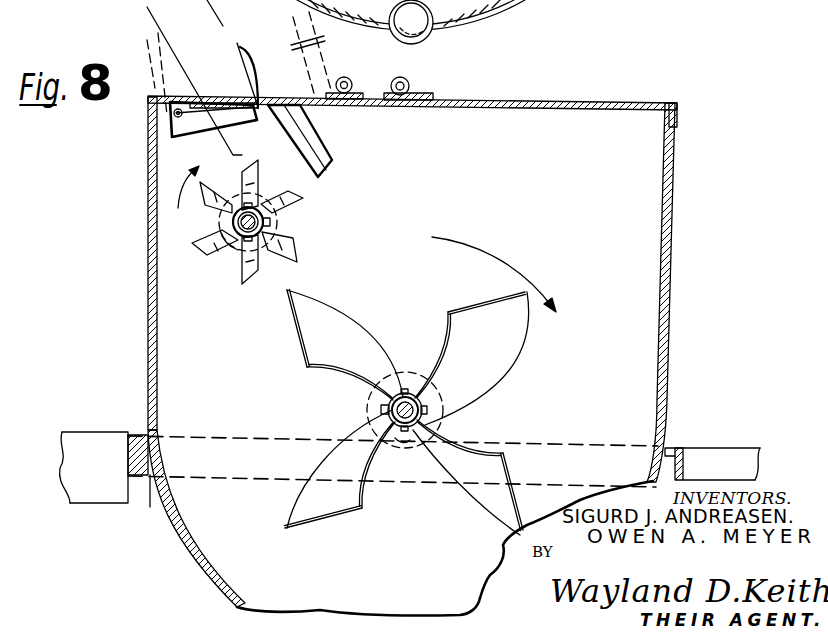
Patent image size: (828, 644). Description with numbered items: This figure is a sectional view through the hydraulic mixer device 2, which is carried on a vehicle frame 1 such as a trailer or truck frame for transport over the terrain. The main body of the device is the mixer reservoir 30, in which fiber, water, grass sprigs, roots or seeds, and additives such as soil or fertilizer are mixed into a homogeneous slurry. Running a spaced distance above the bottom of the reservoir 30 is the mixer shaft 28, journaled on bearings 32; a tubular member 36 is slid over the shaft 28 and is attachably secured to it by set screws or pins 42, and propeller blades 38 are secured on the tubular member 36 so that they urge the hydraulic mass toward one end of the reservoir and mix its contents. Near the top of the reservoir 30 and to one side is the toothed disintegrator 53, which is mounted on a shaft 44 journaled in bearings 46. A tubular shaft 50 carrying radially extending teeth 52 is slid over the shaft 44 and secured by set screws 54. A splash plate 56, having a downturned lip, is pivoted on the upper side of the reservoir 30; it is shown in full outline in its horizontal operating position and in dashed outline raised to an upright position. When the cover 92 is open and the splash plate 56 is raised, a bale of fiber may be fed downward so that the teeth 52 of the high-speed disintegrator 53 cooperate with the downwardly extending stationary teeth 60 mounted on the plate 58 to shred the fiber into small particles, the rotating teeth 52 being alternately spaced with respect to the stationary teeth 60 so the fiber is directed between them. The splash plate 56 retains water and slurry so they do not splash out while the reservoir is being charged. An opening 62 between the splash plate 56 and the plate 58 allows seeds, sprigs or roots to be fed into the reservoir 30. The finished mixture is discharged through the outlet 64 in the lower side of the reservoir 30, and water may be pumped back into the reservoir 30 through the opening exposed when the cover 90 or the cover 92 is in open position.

The vehicle frame 1 is at (679, 443).
The hydraulic mixer device 2 is at (681, 162).
The mixer shaft 28 is at (443, 420).
The mixer reservoir 30 is at (658, 402).
The bearings 32 is at (403, 444).
The tubular member 36 is at (422, 387).
The propeller blades 38 is at (460, 323).
The set screws or pins 42 is at (381, 409).
The shaft 44 is at (230, 231).
The bearings 46 is at (270, 222).
The tubular shaft 50 is at (238, 258).
The teeth 52 is at (295, 253).
The toothed disintegrator 53 is at (190, 253).
The set screws 54 is at (286, 214).
The splash plate 56 is at (163, 68).
The plate 58 is at (400, 104).
The stationary teeth 60 is at (324, 162).
The opening 62 is at (202, 77).
The outlet 64 is at (433, 32).
The cover 90 is at (548, 96).
The cover 92 is at (303, 68).